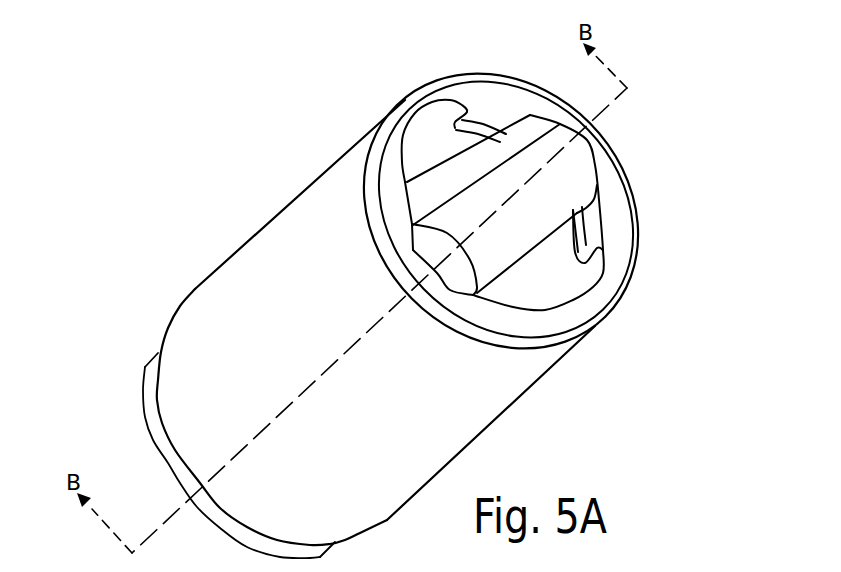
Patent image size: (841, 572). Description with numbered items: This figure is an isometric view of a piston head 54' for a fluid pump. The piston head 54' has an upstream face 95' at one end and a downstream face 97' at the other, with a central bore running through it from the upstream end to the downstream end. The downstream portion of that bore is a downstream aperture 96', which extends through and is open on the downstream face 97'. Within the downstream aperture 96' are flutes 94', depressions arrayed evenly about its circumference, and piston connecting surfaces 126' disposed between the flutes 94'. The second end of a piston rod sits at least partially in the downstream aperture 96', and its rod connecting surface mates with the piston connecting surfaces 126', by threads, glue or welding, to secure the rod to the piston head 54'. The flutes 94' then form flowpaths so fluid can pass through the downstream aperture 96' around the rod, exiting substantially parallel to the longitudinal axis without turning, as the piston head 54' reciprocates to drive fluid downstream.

The piston head 54' is at (426, 281).
The flutes 94' is at (546, 178).
The upstream face 95' is at (239, 462).
The downstream aperture 96' is at (501, 173).
The downstream face 97' is at (510, 209).
The piston connecting surface 126' is at (546, 204).